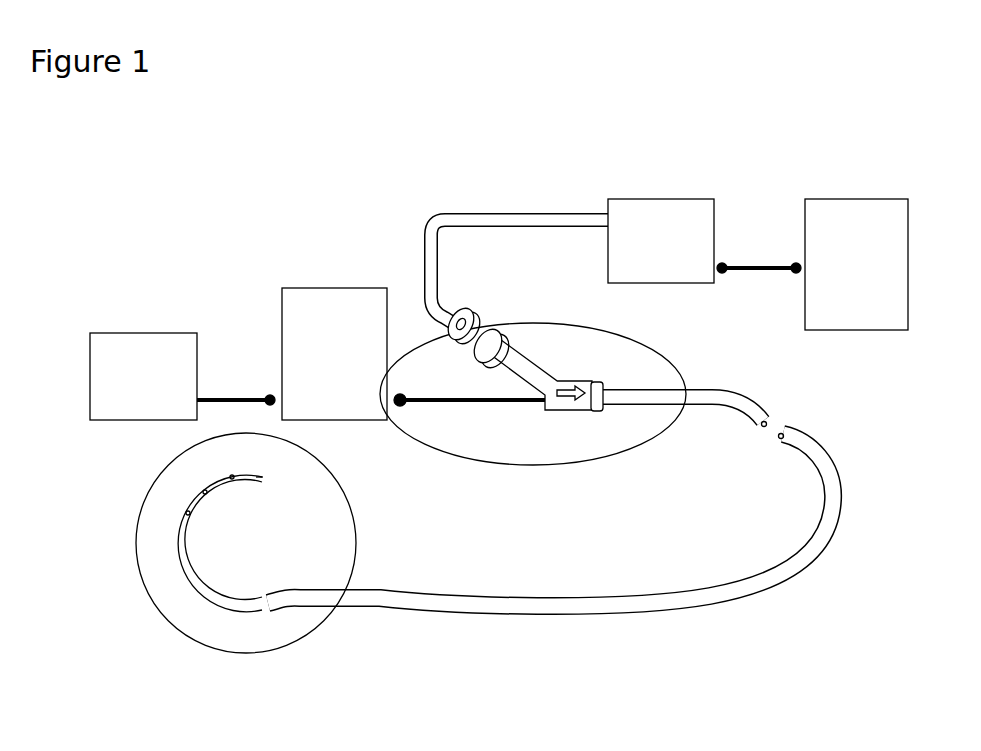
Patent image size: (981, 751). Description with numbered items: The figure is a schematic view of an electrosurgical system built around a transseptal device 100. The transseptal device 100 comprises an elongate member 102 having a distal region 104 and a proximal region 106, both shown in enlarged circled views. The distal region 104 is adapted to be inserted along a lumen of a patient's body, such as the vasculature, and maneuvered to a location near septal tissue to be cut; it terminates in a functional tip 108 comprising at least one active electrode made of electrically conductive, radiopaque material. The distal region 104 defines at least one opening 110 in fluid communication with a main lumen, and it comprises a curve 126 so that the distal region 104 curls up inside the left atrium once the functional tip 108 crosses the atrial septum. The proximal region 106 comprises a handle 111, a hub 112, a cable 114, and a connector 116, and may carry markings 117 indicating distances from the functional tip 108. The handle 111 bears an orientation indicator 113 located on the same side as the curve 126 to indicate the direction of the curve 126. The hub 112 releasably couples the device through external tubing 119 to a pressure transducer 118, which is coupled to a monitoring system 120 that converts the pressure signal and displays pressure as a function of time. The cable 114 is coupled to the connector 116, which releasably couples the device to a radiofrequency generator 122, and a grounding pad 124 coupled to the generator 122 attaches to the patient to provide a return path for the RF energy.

The transseptal device 100 is at (550, 562).
The elongate member 102 is at (373, 602).
The distal region 104 is at (147, 594).
The proximal region 106 is at (670, 362).
The functional tip 108 is at (260, 477).
The opening 110 is at (188, 513).
The handle 111 is at (592, 365).
The hub 112 is at (492, 330).
The orientation indicator 113 is at (569, 399).
The cable 114 is at (470, 402).
The connector 116 is at (400, 408).
The markings 117 is at (670, 408).
The pressure transducer 118 is at (655, 196).
The external tubing 119 is at (494, 216).
The monitoring system 120 is at (855, 196).
The generator 122 is at (318, 308).
The grounding pad 124 is at (128, 348).
The curve 126 is at (198, 603).